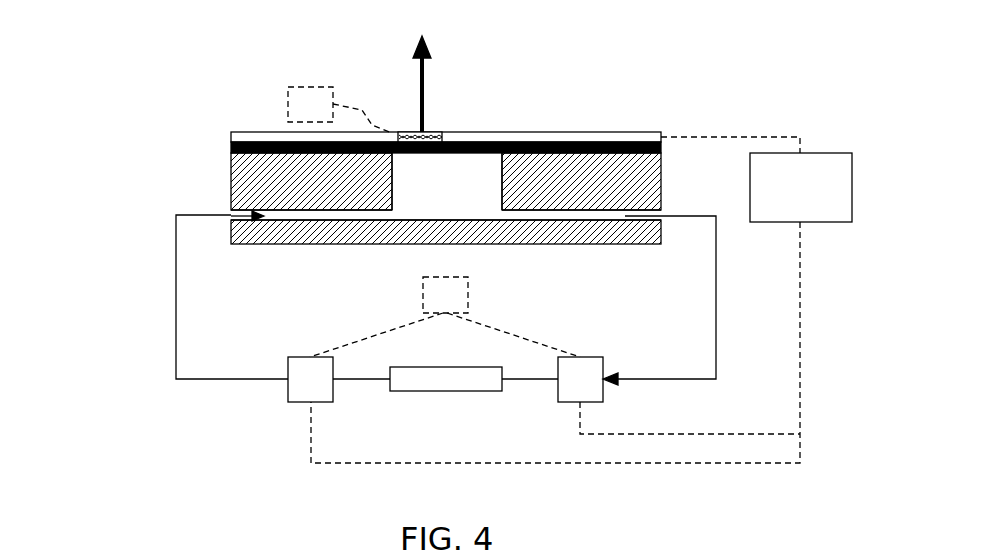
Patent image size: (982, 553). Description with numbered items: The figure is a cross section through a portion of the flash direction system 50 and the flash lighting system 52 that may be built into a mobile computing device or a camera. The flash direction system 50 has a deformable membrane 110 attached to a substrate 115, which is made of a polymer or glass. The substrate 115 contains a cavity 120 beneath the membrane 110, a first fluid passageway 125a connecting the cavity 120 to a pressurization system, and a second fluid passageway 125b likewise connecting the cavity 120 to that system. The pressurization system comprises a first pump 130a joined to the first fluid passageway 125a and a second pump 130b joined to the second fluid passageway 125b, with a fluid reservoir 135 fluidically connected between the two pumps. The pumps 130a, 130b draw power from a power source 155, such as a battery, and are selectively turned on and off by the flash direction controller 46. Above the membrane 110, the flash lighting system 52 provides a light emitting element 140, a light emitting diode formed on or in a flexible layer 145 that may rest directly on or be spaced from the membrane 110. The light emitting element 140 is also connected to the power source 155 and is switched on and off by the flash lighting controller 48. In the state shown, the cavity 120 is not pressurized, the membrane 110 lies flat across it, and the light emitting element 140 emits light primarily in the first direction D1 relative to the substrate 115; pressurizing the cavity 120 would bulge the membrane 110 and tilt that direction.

The flash direction system 50 is at (102, 136).
The flash lighting system 52 is at (222, 81).
The first direction D1 is at (419, 71).
The flexible layer 145 is at (232, 132).
The light emitting element 140 is at (441, 132).
The deformable membrane 110 is at (232, 147).
The substrate 115 is at (232, 182).
The cavity 120 is at (457, 187).
The first fluid passageway 125a is at (307, 217).
The second fluid passageway 125b is at (553, 217).
The first pump 130a is at (298, 355).
The second pump 130b is at (590, 357).
The fluid reservoir 135 is at (428, 385).
The power source 155 is at (827, 155).
The flash lighting controller 48 is at (300, 113).
The flash direction controller 46 is at (435, 303).